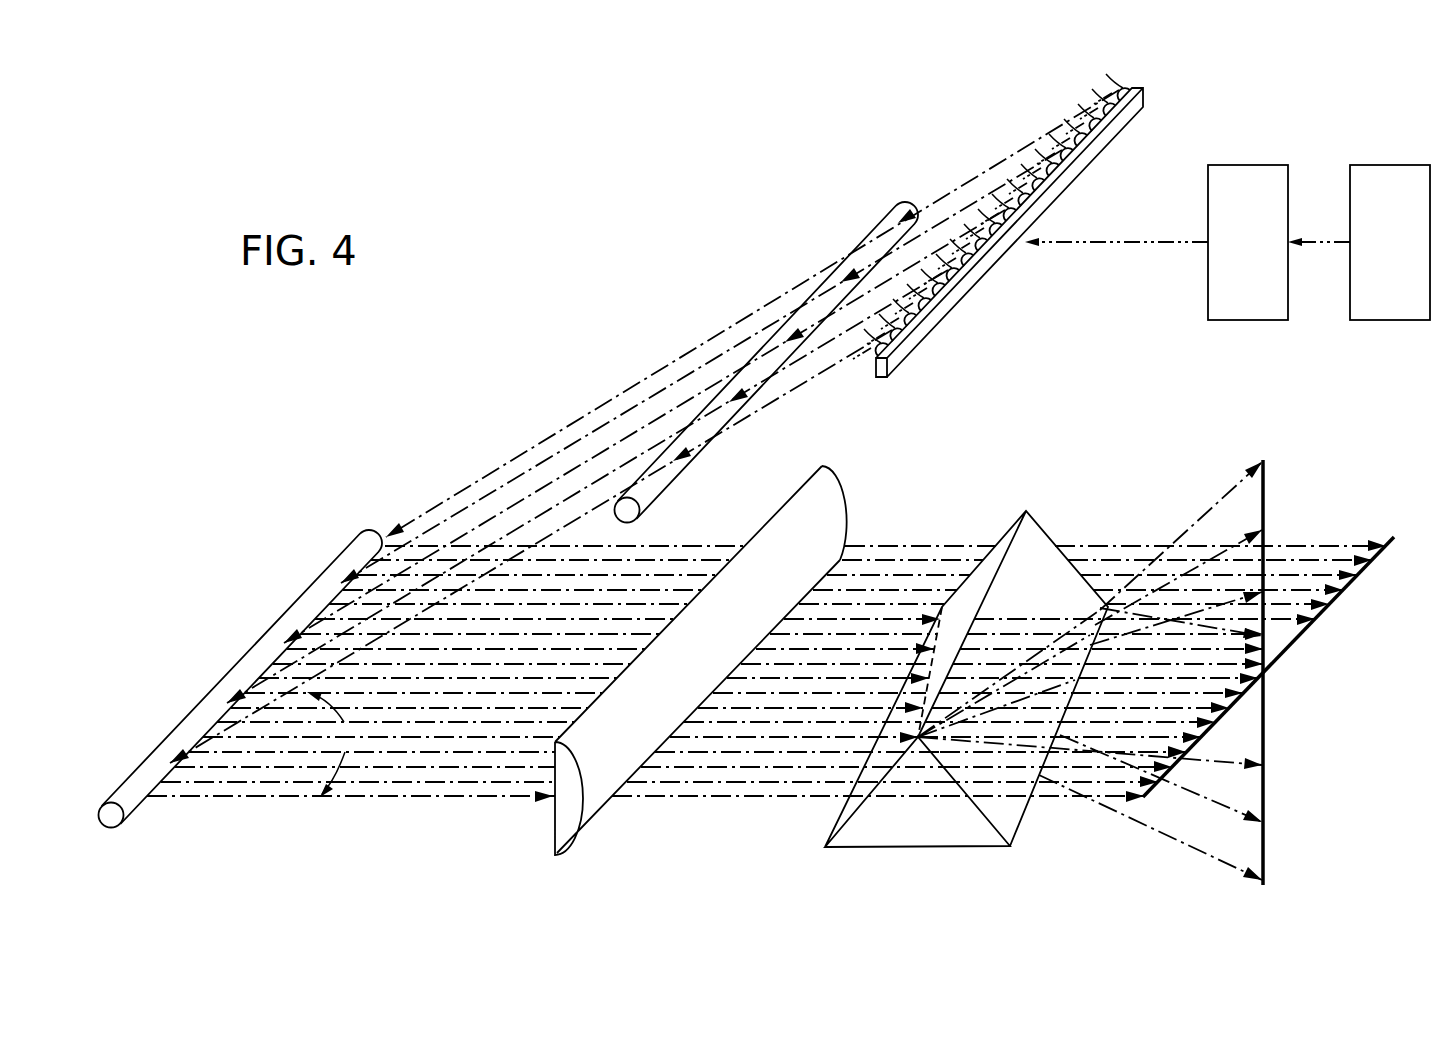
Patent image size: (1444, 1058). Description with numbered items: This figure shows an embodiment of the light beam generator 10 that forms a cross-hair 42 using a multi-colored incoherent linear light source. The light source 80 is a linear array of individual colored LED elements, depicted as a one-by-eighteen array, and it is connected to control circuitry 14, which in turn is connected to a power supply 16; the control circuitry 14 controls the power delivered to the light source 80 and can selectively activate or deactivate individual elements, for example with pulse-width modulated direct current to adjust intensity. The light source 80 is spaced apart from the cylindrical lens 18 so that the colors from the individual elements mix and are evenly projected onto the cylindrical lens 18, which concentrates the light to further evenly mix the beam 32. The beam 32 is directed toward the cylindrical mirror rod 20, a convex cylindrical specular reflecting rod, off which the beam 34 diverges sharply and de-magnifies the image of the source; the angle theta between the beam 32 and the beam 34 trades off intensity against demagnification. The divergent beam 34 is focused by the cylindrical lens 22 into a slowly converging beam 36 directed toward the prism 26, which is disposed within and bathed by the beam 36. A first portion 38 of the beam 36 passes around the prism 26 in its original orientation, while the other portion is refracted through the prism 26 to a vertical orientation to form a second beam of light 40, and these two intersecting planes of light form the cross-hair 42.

The light beam generator 10 is at (520, 248).
The control circuitry 14 is at (1240, 165).
The power supply 16 is at (1395, 165).
The cylindrical lens 18 is at (861, 243).
The cylindrical mirror rod 20 is at (113, 826).
The cylindrical lens 22 is at (833, 512).
The prism 26 is at (987, 545).
The beam 32 is at (446, 478).
The beam 34 is at (409, 800).
The slowly converging beam 36 is at (744, 745).
The first portion of the beam 38 is at (1066, 800).
The second beam of light 40 is at (1190, 597).
The cross-hair 42 is at (1266, 668).
The light source 80 is at (975, 314).